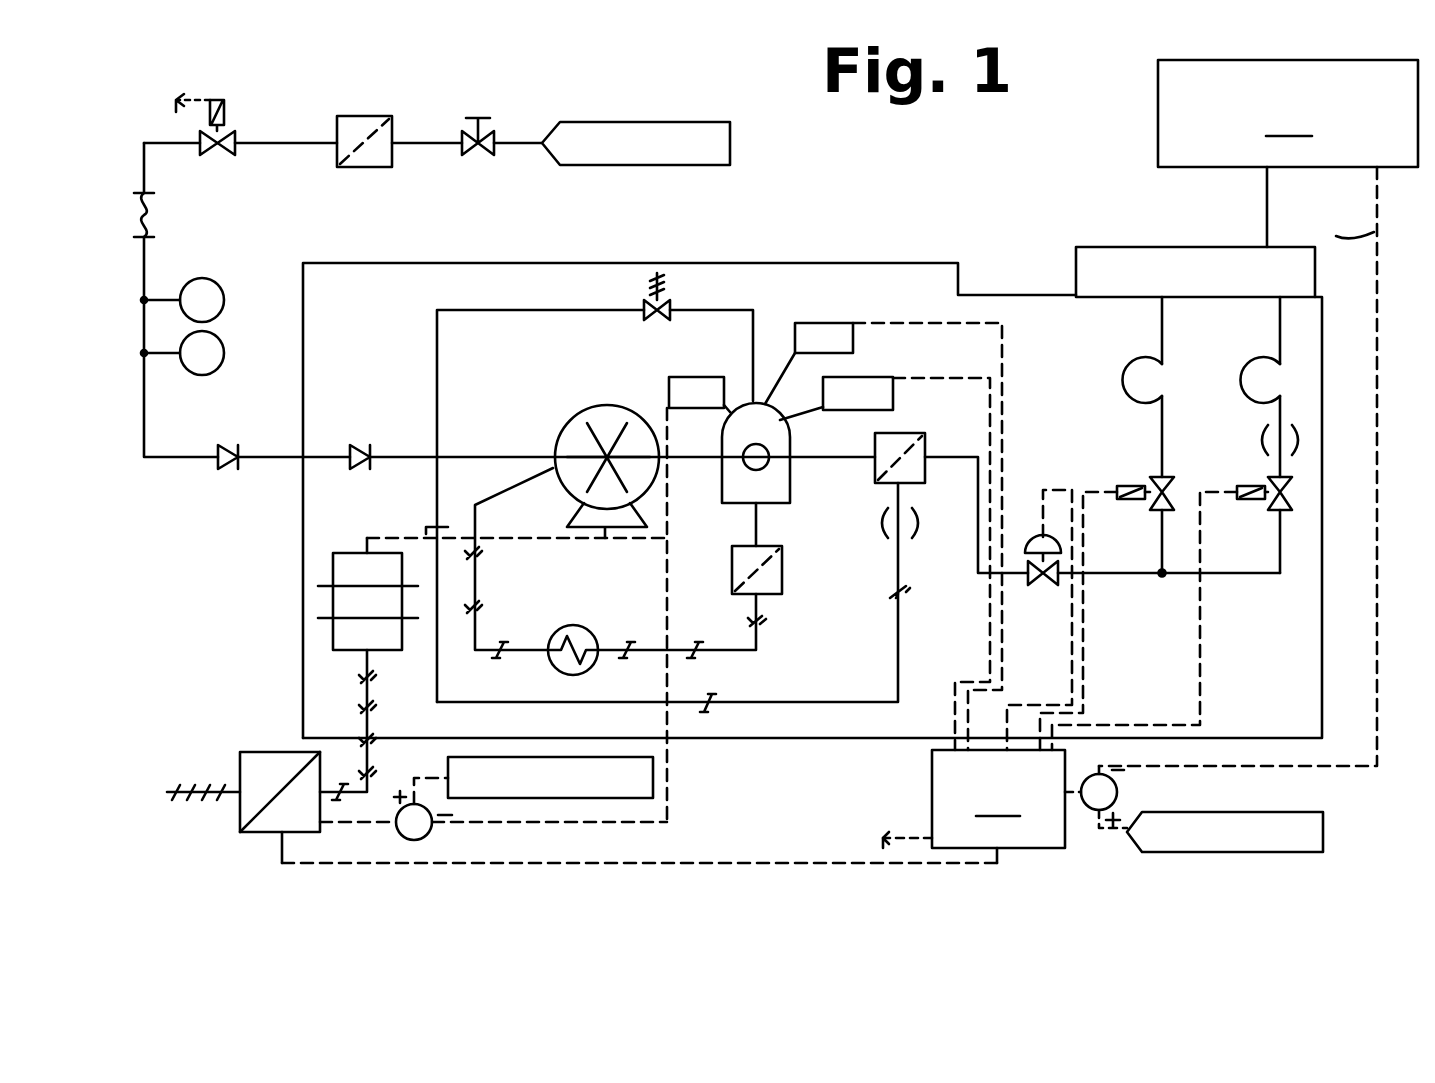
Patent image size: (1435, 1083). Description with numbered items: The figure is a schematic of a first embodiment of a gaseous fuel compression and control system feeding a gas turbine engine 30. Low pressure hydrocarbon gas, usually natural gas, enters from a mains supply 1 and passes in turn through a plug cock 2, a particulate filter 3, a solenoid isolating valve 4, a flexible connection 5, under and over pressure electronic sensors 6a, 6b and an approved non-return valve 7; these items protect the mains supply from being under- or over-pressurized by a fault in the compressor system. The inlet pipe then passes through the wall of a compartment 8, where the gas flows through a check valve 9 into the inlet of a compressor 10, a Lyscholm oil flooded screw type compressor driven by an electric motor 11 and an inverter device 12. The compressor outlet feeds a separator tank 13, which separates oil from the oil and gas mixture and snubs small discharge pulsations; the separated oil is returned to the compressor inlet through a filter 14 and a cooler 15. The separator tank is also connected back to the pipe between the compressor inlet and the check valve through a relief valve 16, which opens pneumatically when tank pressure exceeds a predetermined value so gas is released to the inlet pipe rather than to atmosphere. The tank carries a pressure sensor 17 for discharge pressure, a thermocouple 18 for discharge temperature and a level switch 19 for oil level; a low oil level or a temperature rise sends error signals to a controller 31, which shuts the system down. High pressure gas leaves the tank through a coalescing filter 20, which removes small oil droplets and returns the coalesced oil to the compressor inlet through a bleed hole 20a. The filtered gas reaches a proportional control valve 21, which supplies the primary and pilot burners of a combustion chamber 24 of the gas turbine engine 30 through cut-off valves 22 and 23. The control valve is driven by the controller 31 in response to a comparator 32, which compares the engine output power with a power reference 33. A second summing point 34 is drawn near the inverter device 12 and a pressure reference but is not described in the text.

The mains supply 1 is at (680, 122).
The plug cock 2 is at (488, 118).
The particulate filter 3 is at (372, 116).
The solenoid isolating valve 4 is at (226, 108).
The flexible connection 5 is at (148, 230).
The under pressure electronic sensor 6a is at (222, 296).
The over pressure electronic sensor 6b is at (222, 350).
The non-return valve 7 is at (222, 470).
The compartment 8 is at (303, 537).
The check valve 9 is at (364, 446).
The compressor 10 is at (572, 420).
The electric motor 11 is at (333, 604).
The inverter device 12 is at (264, 752).
The separator tank 13 is at (720, 502).
The filter 14 is at (782, 580).
The cooler 15 is at (590, 634).
The relief valve 16 is at (672, 304).
The pressure sensor 17 is at (694, 377).
The thermocouple 18 is at (822, 323).
The level switch 19 is at (868, 377).
The coalescing filter 20 is at (918, 434).
The bleed hole 20a is at (910, 526).
The control valve 21 is at (1045, 596).
The cut-off valve 22 is at (1134, 486).
The cut-off valve 23 is at (1246, 486).
The combustion chamber 24 is at (1130, 247).
The gas turbine engine 30 is at (1258, 413).
The controller 31 is at (974, 806).
The comparator 32 is at (1118, 792).
The power reference 33 is at (1323, 834).
The pressure summing junction 34 is at (428, 838).